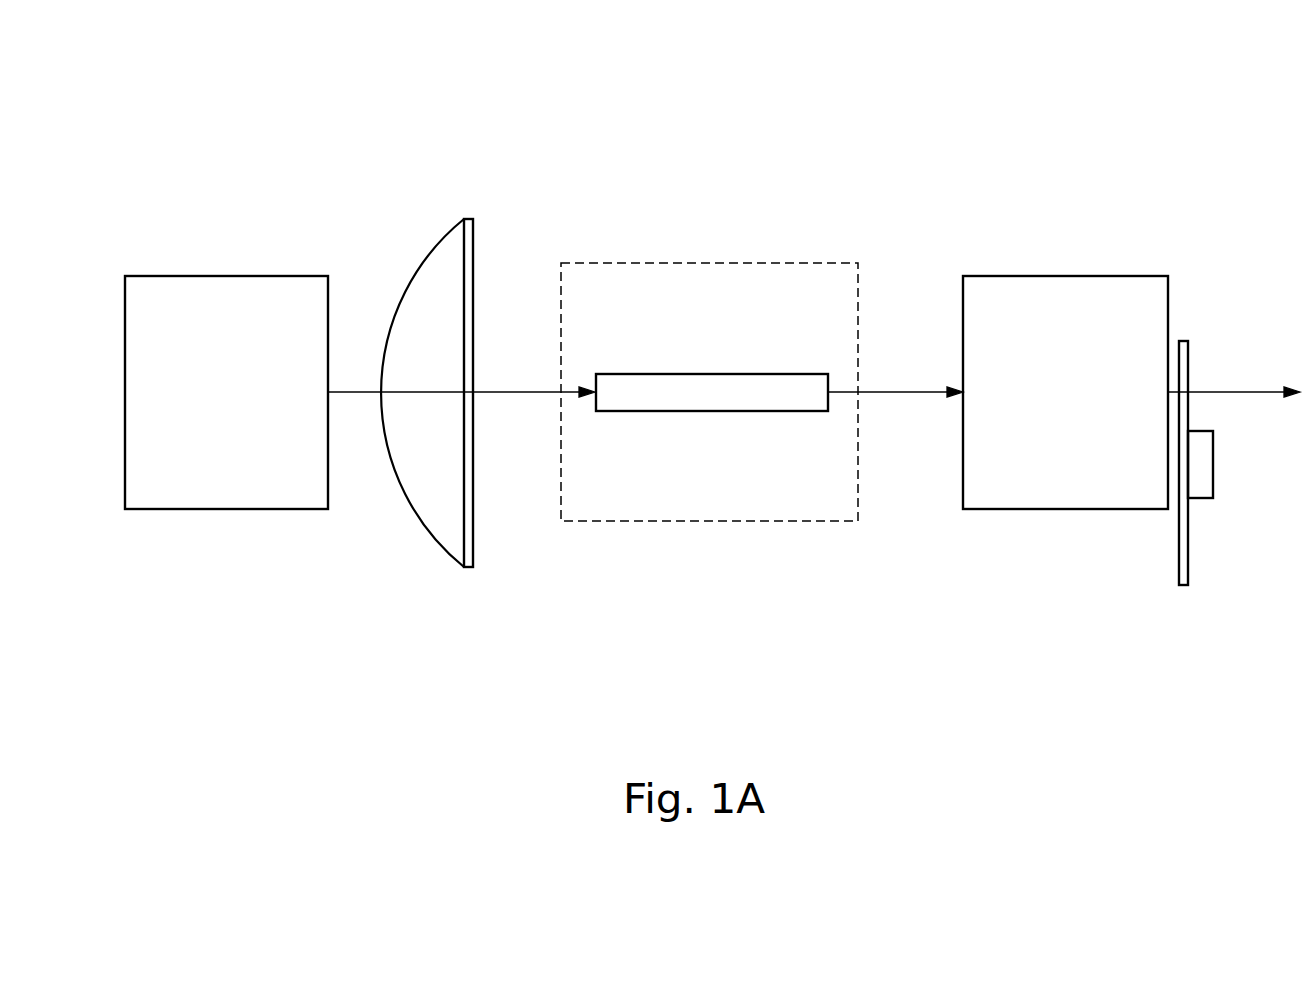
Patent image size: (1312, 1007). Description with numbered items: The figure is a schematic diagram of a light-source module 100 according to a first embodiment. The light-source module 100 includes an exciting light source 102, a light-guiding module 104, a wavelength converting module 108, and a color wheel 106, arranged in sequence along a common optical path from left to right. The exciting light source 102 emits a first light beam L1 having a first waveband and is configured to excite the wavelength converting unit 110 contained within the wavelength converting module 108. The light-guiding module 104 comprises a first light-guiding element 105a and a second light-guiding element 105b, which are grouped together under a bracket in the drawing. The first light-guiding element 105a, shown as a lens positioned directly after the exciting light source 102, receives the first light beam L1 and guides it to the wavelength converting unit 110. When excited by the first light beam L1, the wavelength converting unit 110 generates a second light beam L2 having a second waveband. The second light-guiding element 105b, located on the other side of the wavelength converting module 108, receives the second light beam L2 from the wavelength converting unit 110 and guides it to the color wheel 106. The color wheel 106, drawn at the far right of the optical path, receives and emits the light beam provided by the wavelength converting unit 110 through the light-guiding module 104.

The light-source module 100 is at (172, 72).
The exciting light source 102 is at (214, 509).
The light-guiding module 104 is at (898, 110).
The first light-guiding element 105a is at (467, 216).
The second light-guiding element 105b is at (993, 276).
The color wheel 106 is at (1183, 586).
The wavelength converting module 108 is at (710, 521).
The wavelength converting unit 110 is at (660, 411).
The first light beam L1 is at (523, 392).
The second light beam L2 is at (920, 392).